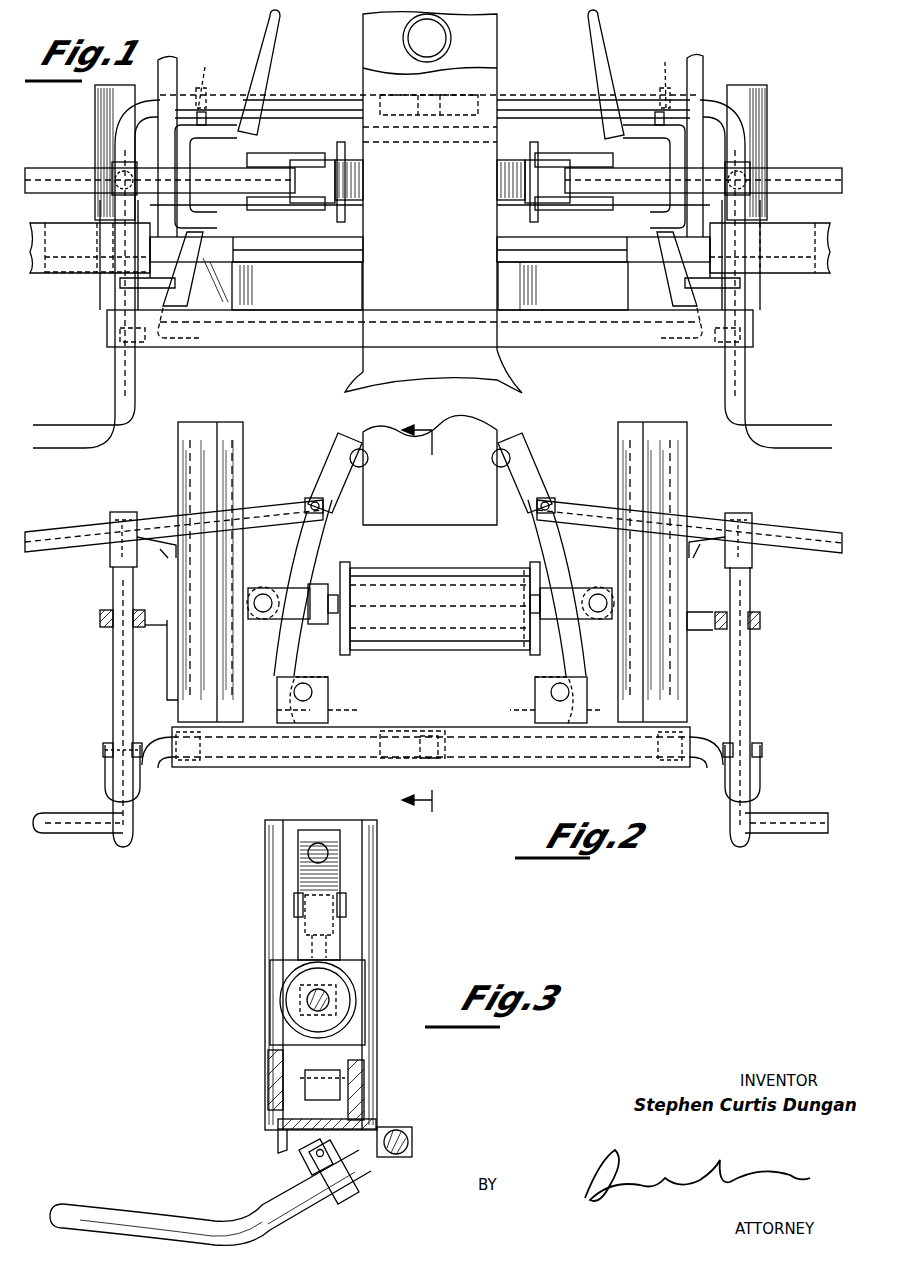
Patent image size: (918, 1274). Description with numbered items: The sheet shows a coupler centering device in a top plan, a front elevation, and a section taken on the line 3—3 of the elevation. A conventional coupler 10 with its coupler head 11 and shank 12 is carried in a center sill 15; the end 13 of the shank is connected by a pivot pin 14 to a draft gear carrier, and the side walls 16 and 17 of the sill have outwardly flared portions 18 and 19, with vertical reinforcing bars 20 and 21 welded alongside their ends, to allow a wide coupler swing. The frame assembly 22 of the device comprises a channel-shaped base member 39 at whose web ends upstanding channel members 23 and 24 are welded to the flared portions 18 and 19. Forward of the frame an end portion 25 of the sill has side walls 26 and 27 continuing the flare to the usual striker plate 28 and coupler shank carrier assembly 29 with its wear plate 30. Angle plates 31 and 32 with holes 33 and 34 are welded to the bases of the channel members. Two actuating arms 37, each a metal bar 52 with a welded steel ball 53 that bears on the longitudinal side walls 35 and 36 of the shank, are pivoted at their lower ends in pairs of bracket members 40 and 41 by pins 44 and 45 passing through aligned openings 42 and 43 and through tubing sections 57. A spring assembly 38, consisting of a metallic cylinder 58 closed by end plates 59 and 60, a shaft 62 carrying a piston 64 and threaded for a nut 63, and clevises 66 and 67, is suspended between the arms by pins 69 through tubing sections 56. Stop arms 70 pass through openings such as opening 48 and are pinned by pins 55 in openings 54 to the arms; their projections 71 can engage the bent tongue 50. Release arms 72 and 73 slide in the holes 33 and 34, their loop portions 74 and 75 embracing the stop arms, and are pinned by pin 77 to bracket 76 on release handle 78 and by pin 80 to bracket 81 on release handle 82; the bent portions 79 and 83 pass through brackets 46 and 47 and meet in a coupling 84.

In FIG. 1, the coupler 10 is at (352, 366).
In FIG. 1, the coupler head 11 is at (516, 374).
In FIG. 1, the shank 12 is at (497, 58).
In FIG. 2, the shank 12 is at (430, 522).
In FIG. 1, the end of shank 13 is at (368, 26).
In FIG. 1, the pivot pin 14 is at (452, 30).
In FIG. 1, the center sill 15 is at (244, 70).
In FIG. 1, the side wall of sill 16 is at (268, 26).
In FIG. 1, the side wall of sill 17 is at (598, 22).
In FIG. 1, the flared portion 18 is at (276, 48).
In FIG. 1, the flared portion 19 is at (592, 56).
In FIG. 1, the reinforcing bar 20 is at (206, 114).
In FIG. 1, the reinforcing bar 21 is at (654, 114).
In FIG. 1, the frame assembly 22 is at (286, 129).
In FIG. 2, the frame assembly 22 is at (544, 776).
In FIG. 3, the frame assembly 22 is at (259, 956).
In FIG. 1, the upstanding channel member 23 is at (196, 152).
In FIG. 2, the upstanding channel member 23 is at (198, 422).
In FIG. 1, the upstanding channel member 24 is at (668, 152).
In FIG. 2, the upstanding channel member 24 is at (662, 422).
In FIG. 1, the end portion of sill 25 is at (268, 355).
In FIG. 1, the side wall 26 is at (170, 298).
In FIG. 1, the side wall 27 is at (685, 296).
In FIG. 1, the striker plate 28 is at (637, 350).
In FIG. 1, the coupler shank carrier assembly 29 is at (218, 300).
In FIG. 1, the wear plate 30 is at (600, 296).
In FIG. 1, the angle plate 31 is at (96, 118).
In FIG. 2, the angle plate 31 is at (150, 630).
In FIG. 1, the angle plate 32 is at (768, 118).
In FIG. 2, the angle plate 32 is at (714, 614).
In FIG. 1, the hole 33 is at (98, 170).
In FIG. 2, the hole 33 is at (110, 612).
In FIG. 1, the hole 34 is at (770, 200).
In FIG. 2, the hole 34 is at (758, 608).
In FIG. 1, the side wall of coupler shank 35 is at (363, 100).
In FIG. 2, the side wall of coupler shank 35 is at (363, 510).
In FIG. 1, the side wall of coupler shank 36 is at (497, 92).
In FIG. 2, the side wall of coupler shank 36 is at (497, 510).
In FIG. 1, the actuating arm 37 is at (305, 215).
In FIG. 2, the actuating arm 37 is at (330, 444).
In FIG. 3, the actuating arm 37 is at (347, 838).
In FIG. 1, the spring assembly 38 is at (419, 235).
In FIG. 2, the spring assembly 38 is at (475, 650).
In FIG. 3, the spring assembly 38 is at (355, 992).
In FIG. 1, the channel-shaped base member 39 is at (305, 243).
In FIG. 2, the channel-shaped base member 39 is at (244, 768).
In FIG. 3, the channel-shaped base member 39 is at (278, 1145).
In FIG. 2, the bracket members 40 is at (340, 679).
In FIG. 3, the bracket members 40 is at (358, 1085).
In FIG. 2, the bracket members 41 is at (524, 690).
In FIG. 2, the aligned openings 42 is at (312, 692).
In FIG. 2, the aligned openings 43 is at (550, 694).
In FIG. 2, the pin 44 is at (318, 686).
In FIG. 3, the pin 44 is at (266, 1088).
In FIG. 2, the pin 45 is at (553, 686).
In FIG. 1, the bracket 46 is at (211, 62).
In FIG. 2, the bracket 46 is at (202, 768).
In FIG. 3, the bracket 46 is at (412, 1142).
In FIG. 1, the bracket 47 is at (665, 62).
In FIG. 2, the bracket 47 is at (660, 768).
In FIG. 3, the opening 48 is at (346, 925).
In FIG. 2, the tongue portion 50 is at (175, 555).
In FIG. 2, the metal bar 52 is at (292, 565).
In FIG. 3, the metal bar 52 is at (335, 858).
In FIG. 1, the steel ball 53 is at (365, 182).
In FIG. 2, the steel ball 53 is at (365, 465).
In FIG. 3, the steel ball 53 is at (306, 860).
In FIG. 3, the opening 54 is at (348, 900).
In FIG. 2, the pin 55 is at (312, 500).
In FIG. 3, the pin 55 is at (294, 902).
In FIG. 2, the seamless tubing section 56 is at (255, 622).
In FIG. 2, the seamless tubing section 57 is at (438, 711).
In FIG. 3, the seamless tubing section 57 is at (345, 1098).
In FIG. 1, the metallic cylinder 58 is at (452, 245).
In FIG. 2, the metallic cylinder 58 is at (460, 568).
In FIG. 1, the end plate 59 is at (336, 146).
In FIG. 2, the end plate 59 is at (345, 562).
In FIG. 1, the end plate 60 is at (538, 146).
In FIG. 2, the end plate 60 is at (538, 562).
In FIG. 2, the shaft 62 is at (428, 600).
In FIG. 3, the shaft 62 is at (307, 1002).
In FIG. 2, the nut 63 is at (320, 586).
In FIG. 2, the piston 64 is at (522, 628).
In FIG. 2, the clevis 66 is at (556, 634).
In FIG. 2, the clevis 67 is at (310, 634).
In FIG. 2, the pin 69 is at (264, 595).
In FIG. 1, the stop arm 70 is at (36, 176).
In FIG. 2, the stop arm 70 is at (155, 520).
In FIG. 2, the projection 71 is at (431, 556).
In FIG. 1, the release arm 72 is at (96, 274).
In FIG. 2, the release arm 72 is at (113, 690).
In FIG. 1, the release arm 73 is at (766, 274).
In FIG. 2, the release arm 73 is at (750, 668).
In FIG. 1, the loop portion 74 is at (100, 196).
In FIG. 2, the loop portion 74 is at (110, 520).
In FIG. 1, the loop portion 75 is at (750, 165).
In FIG. 2, the loop portion 75 is at (752, 515).
In FIG. 2, the bracket 76 is at (105, 788).
In FIG. 3, the bracket 76 is at (340, 1192).
In FIG. 2, the pin 77 is at (103, 755).
In FIG. 3, the pin 77 is at (310, 1150).
In FIG. 1, the release handle 78 is at (66, 424).
In FIG. 2, the release handle 78 is at (66, 836).
In FIG. 3, the release handle 78 is at (198, 1228).
In FIG. 1, the bent portion 79 is at (315, 108).
In FIG. 2, the bent portion 79 is at (315, 760).
In FIG. 2, the pin 80 is at (760, 758).
In FIG. 2, the bracket 81 is at (760, 795).
In FIG. 1, the release handle 82 is at (796, 424).
In FIG. 2, the release handle 82 is at (792, 836).
In FIG. 1, the bent portion 83 is at (558, 108).
In FIG. 2, the bent portion 83 is at (595, 760).
In FIG. 1, the coupling 84 is at (430, 125).
In FIG. 2, the coupling 84 is at (455, 760).
In FIG. 2, the section line 3 is at (428, 616).